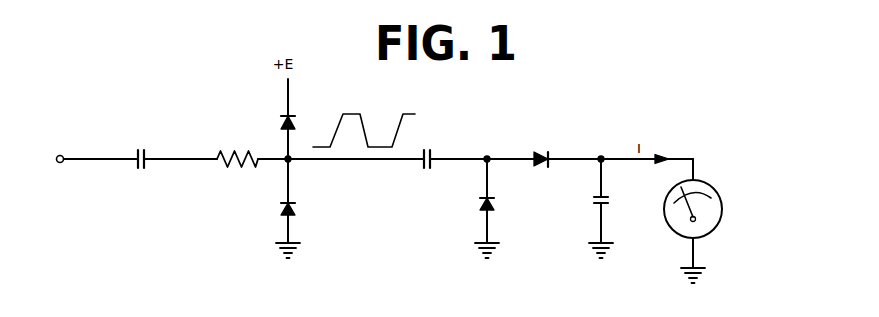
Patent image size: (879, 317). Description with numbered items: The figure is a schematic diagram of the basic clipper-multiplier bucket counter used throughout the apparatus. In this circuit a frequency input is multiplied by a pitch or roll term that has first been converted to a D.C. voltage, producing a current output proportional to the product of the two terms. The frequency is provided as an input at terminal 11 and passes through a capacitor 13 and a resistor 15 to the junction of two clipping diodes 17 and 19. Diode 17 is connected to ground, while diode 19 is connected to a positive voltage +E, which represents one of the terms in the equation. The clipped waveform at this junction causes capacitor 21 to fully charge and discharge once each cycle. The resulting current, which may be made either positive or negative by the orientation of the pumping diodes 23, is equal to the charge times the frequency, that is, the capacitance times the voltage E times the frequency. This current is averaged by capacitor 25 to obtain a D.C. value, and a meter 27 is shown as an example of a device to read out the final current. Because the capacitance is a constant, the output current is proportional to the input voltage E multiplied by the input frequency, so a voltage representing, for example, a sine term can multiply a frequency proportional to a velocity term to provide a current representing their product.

The terminal 11 is at (62, 153).
The capacitor 13 is at (141, 148).
The resistor 15 is at (238, 147).
The clipping diode 17 is at (297, 204).
The clipping diode 19 is at (293, 112).
The capacitor 21 is at (427, 144).
The pumping diodes 23 is at (542, 169).
The capacitor 25 is at (615, 198).
The meter 27 is at (724, 211).